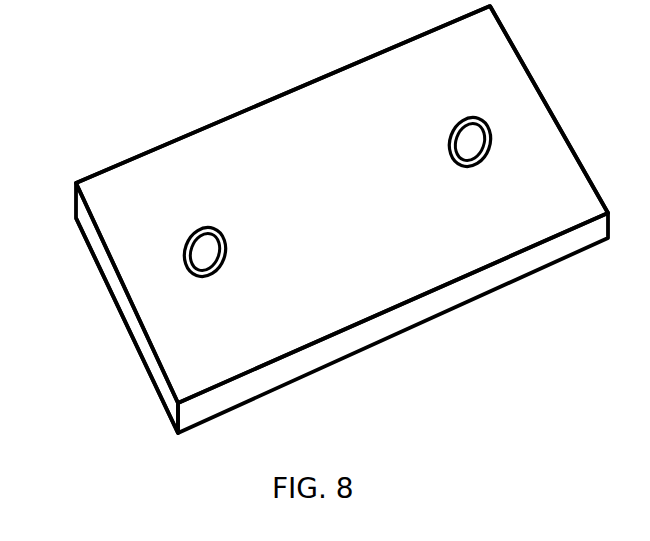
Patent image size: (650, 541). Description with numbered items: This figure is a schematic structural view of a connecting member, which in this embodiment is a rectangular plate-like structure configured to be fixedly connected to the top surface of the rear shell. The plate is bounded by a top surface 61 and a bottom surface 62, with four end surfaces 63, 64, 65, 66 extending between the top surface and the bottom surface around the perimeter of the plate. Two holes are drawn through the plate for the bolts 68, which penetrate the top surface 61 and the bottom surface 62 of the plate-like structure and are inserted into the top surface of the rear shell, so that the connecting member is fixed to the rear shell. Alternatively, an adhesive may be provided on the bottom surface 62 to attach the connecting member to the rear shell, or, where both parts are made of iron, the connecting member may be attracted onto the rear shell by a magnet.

The top surface 61 is at (388, 272).
The bottom surface 62 is at (133, 345).
The end surface 63 is at (285, 92).
The end surface 64 is at (92, 248).
The end surface 65 is at (283, 372).
The end surface 66 is at (526, 61).
The bolts 68 is at (470, 140).